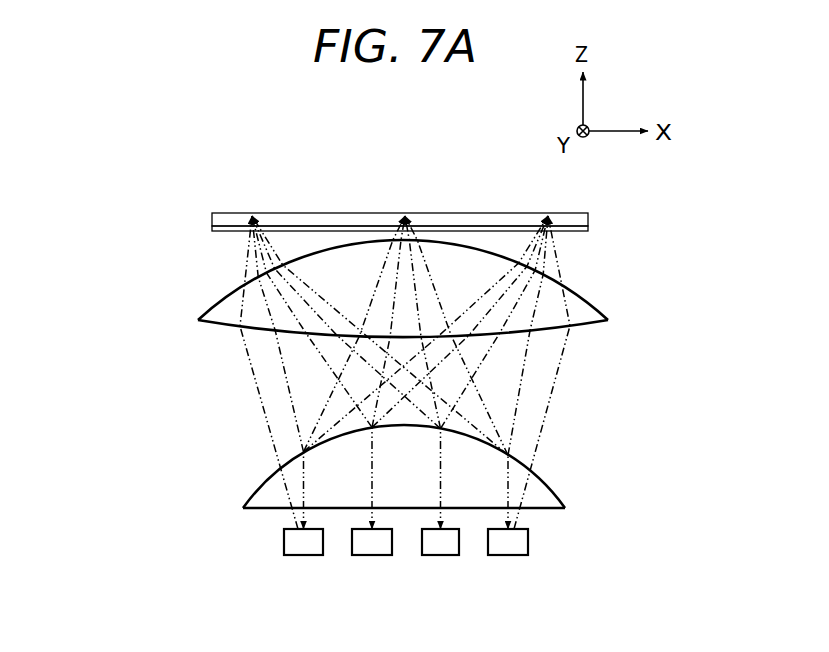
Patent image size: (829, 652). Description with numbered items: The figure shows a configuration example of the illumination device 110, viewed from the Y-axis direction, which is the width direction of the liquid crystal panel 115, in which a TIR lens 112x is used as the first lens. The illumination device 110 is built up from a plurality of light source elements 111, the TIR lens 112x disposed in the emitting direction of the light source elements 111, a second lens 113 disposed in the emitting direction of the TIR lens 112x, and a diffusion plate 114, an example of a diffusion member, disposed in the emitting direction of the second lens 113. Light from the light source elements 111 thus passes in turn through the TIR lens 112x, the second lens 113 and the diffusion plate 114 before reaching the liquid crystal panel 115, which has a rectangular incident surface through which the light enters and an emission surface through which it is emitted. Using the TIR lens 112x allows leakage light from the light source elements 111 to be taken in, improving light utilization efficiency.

The illumination device 110 is at (108, 226).
The light source elements 111 is at (284, 546).
The TIR lens 112x is at (248, 492).
The second lens 113 is at (200, 318).
The diffusion plate 114 is at (212, 232).
The liquid crystal panel 115 is at (212, 221).